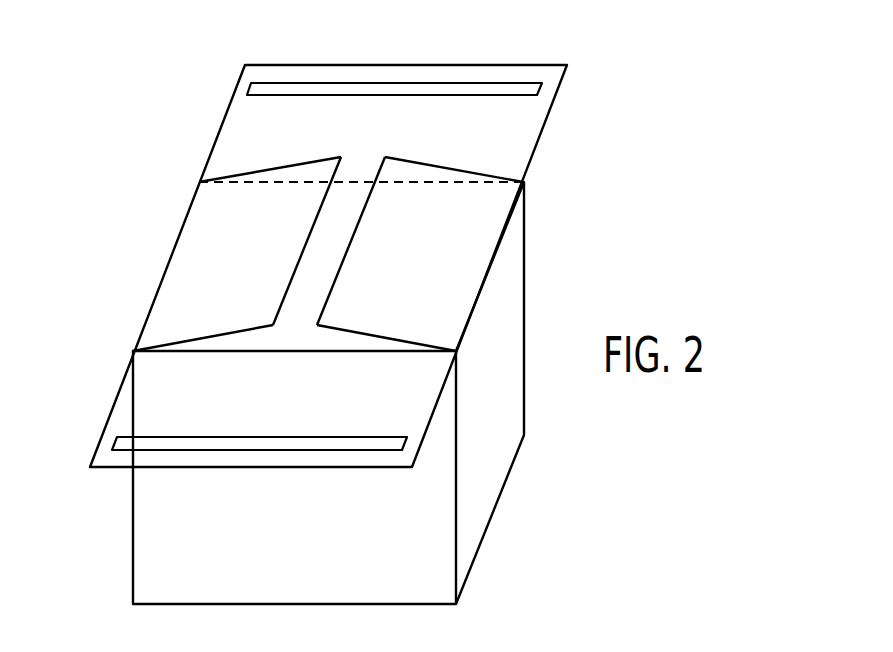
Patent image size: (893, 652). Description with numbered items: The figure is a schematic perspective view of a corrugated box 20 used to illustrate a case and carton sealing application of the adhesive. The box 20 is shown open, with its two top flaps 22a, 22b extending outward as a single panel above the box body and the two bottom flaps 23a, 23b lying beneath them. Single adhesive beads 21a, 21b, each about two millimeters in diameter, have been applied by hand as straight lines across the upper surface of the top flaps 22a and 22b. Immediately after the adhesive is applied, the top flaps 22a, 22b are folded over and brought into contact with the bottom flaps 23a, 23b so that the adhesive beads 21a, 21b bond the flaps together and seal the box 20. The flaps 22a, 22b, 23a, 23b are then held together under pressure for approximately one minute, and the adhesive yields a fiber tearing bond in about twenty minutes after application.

The corrugated box 20 is at (497, 518).
The adhesive bead 21a is at (485, 90).
The adhesive bead 21b is at (123, 442).
The top flap 22a is at (393, 137).
The top flap 22b is at (300, 411).
The bottom flap 23a is at (262, 260).
The bottom flap 23b is at (442, 270).